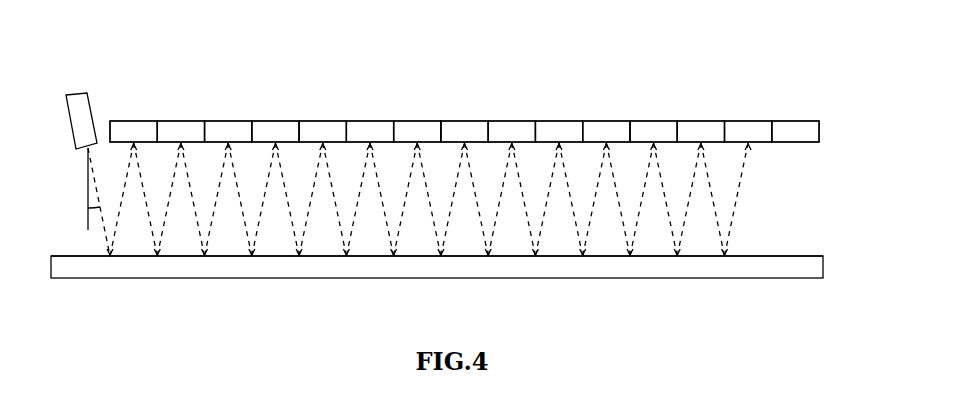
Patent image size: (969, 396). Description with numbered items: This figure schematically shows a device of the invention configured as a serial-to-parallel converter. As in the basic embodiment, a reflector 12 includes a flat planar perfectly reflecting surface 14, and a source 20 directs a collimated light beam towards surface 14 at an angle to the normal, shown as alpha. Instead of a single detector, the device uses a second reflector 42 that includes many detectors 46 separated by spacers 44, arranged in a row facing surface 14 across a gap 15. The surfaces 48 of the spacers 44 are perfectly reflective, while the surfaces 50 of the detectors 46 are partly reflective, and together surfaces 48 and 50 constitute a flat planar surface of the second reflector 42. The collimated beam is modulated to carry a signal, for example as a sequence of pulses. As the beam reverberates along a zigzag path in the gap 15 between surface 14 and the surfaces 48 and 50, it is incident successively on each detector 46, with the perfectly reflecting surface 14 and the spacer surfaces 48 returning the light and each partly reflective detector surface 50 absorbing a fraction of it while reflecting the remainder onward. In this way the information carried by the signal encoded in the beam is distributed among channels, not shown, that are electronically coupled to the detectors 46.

The reflector 12 is at (793, 270).
The perfectly reflecting surface 14 is at (822, 254).
The gap 15 is at (788, 239).
The source 20 is at (80, 105).
The second reflector 42 is at (834, 128).
The spacers 44 is at (138, 128).
The detectors 46 is at (185, 128).
The surfaces of spacers 48 is at (147, 143).
The surfaces of detectors 50 is at (264, 143).